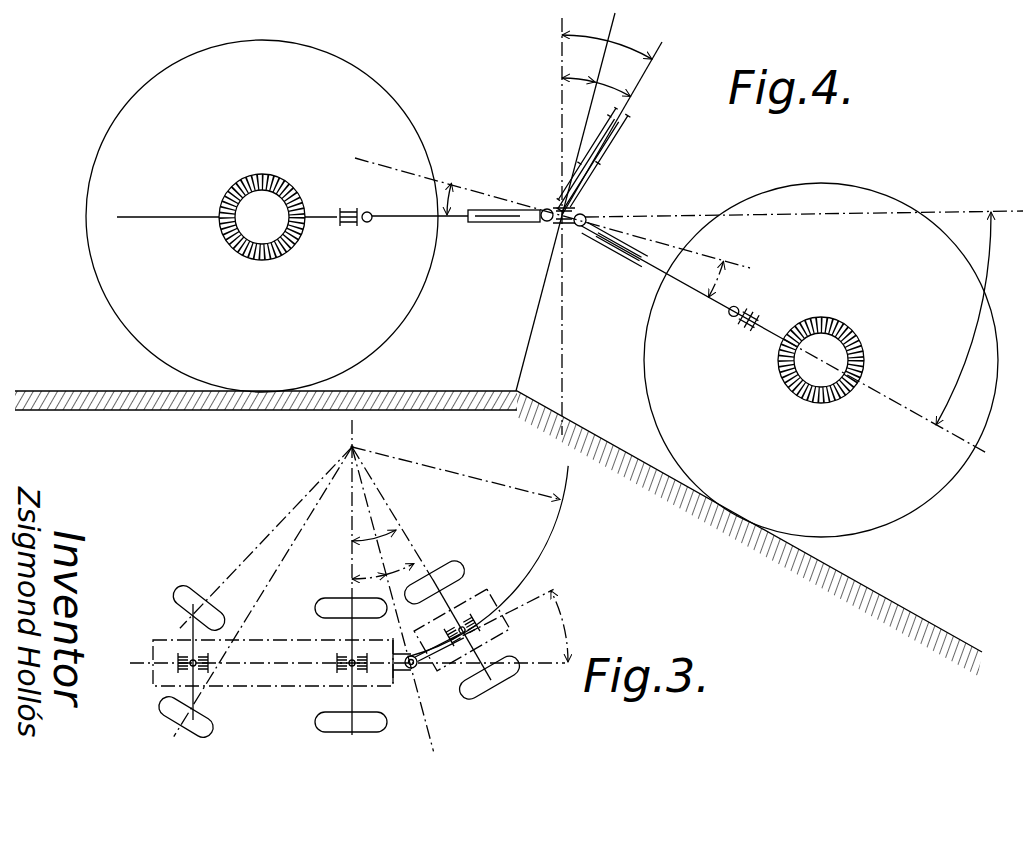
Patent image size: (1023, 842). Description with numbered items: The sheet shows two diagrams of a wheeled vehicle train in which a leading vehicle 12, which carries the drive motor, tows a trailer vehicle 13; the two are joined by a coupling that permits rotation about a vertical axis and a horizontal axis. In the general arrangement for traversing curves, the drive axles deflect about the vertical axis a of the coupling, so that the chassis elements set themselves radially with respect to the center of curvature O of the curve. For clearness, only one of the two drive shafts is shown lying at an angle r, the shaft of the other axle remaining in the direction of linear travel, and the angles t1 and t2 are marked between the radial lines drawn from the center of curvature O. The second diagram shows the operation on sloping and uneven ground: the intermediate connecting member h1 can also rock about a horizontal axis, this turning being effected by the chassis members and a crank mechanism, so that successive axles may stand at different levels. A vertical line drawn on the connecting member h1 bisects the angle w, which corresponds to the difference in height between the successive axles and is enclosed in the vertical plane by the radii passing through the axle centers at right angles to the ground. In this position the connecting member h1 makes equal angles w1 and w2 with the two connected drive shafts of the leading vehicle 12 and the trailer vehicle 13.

In FIG. 3, the leading vehicle 12 is at (265, 686).
In FIG. 3, the trailer vehicle 13 is at (462, 660).
In FIG. 3, the center of curvature O is at (361, 437).
In FIG. 3, the shaft angle r is at (471, 596).
In FIG. 3, the angle t1 is at (369, 588).
In FIG. 3, the angle t2 is at (400, 559).
In FIG. 4, the vertical axis a is at (628, 118).
In FIG. 4, the connecting member h1 is at (566, 226).
In FIG. 4, the angle W w is at (776, 223).
In FIG. 4, the angle W1 w1 is at (495, 134).
In FIG. 4, the angle W2 w2 is at (679, 183).